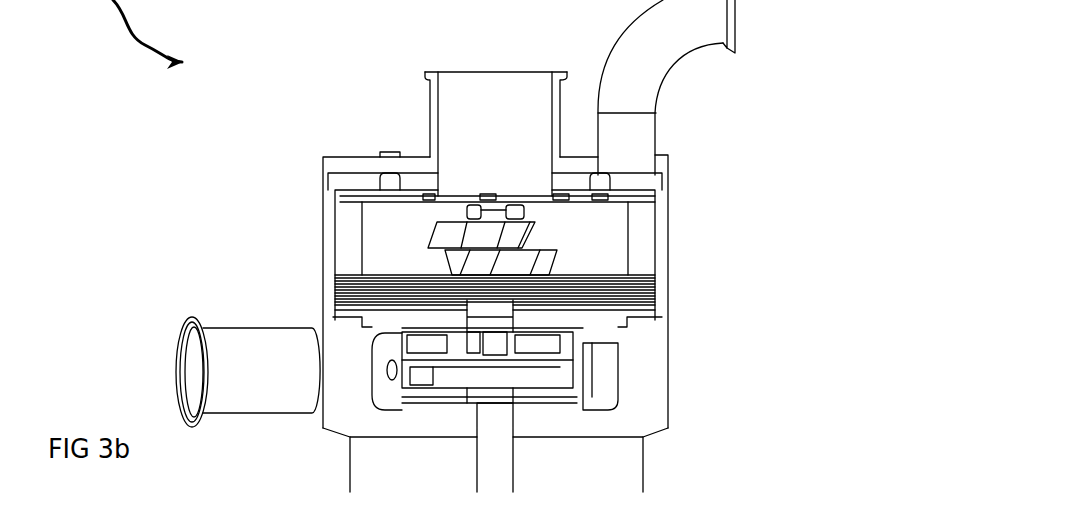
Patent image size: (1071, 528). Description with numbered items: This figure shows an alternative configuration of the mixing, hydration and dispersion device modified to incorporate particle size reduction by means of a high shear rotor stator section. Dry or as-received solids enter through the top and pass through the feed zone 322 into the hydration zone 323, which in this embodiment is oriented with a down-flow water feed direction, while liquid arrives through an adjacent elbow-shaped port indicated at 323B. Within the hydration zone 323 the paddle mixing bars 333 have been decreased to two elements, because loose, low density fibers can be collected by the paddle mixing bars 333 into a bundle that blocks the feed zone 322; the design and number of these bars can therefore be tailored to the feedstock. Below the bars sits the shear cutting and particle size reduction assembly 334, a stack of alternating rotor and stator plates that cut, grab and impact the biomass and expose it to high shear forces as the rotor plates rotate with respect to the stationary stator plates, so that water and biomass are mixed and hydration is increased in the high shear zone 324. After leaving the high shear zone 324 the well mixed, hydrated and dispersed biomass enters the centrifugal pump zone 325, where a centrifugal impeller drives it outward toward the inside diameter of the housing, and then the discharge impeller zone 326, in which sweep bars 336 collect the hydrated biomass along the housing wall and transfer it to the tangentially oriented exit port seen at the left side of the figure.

The feed zone 322 is at (490, 120).
The elbow outlet pipe 323B is at (745, 102).
The hydration zone 323 is at (593, 229).
The high shear zone 324 is at (683, 288).
The centrifugal pump zone 325 is at (493, 347).
The discharge impeller zone 326 is at (605, 380).
The paddle mixing bars 333 is at (450, 238).
The shear cutting and particle size reduction assembly 334 is at (380, 296).
The sweep bars 336 is at (398, 395).